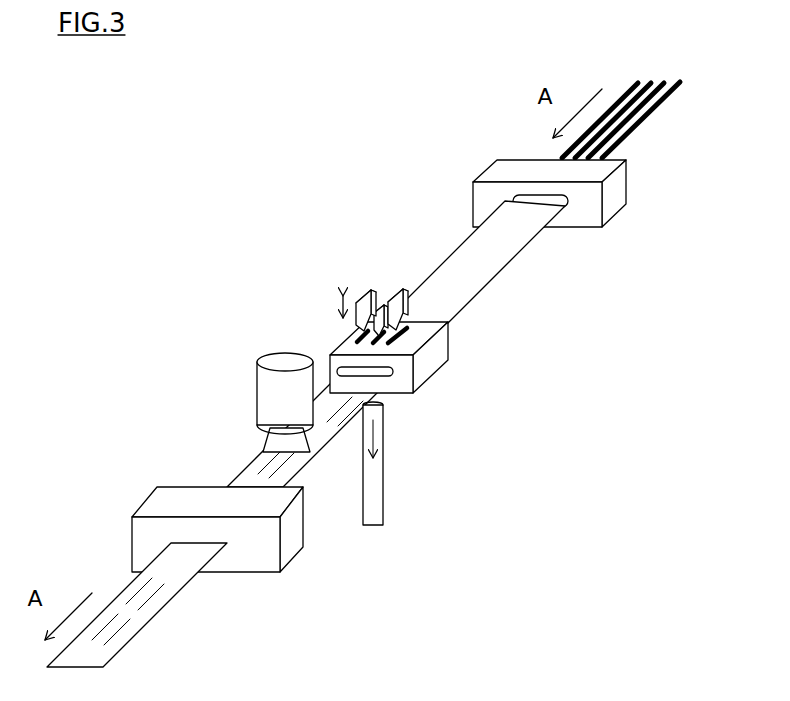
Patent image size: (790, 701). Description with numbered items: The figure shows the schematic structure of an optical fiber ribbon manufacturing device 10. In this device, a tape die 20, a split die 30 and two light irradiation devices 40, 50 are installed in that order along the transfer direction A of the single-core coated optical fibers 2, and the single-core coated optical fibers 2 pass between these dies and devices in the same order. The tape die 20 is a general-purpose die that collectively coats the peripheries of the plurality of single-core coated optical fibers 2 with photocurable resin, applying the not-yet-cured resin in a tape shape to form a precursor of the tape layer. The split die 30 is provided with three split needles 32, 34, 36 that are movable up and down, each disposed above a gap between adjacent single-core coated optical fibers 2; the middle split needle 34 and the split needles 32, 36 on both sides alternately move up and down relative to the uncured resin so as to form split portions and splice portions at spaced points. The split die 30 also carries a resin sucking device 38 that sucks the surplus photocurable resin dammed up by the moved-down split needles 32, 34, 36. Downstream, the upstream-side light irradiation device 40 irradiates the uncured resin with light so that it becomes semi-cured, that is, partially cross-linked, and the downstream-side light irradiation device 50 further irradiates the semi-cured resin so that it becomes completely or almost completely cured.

The single-core coated optical fibers 2 is at (638, 113).
The optical fiber ribbon manufacturing device 10 is at (112, 153).
The tape die 20 is at (620, 213).
The split die 30 is at (423, 373).
The split needle 32 is at (362, 301).
The split needle 34 is at (381, 310).
The split needle 36 is at (397, 300).
The resin sucking device 38 is at (374, 490).
The light irradiation device 40 is at (272, 359).
The light irradiation device 50 is at (157, 504).